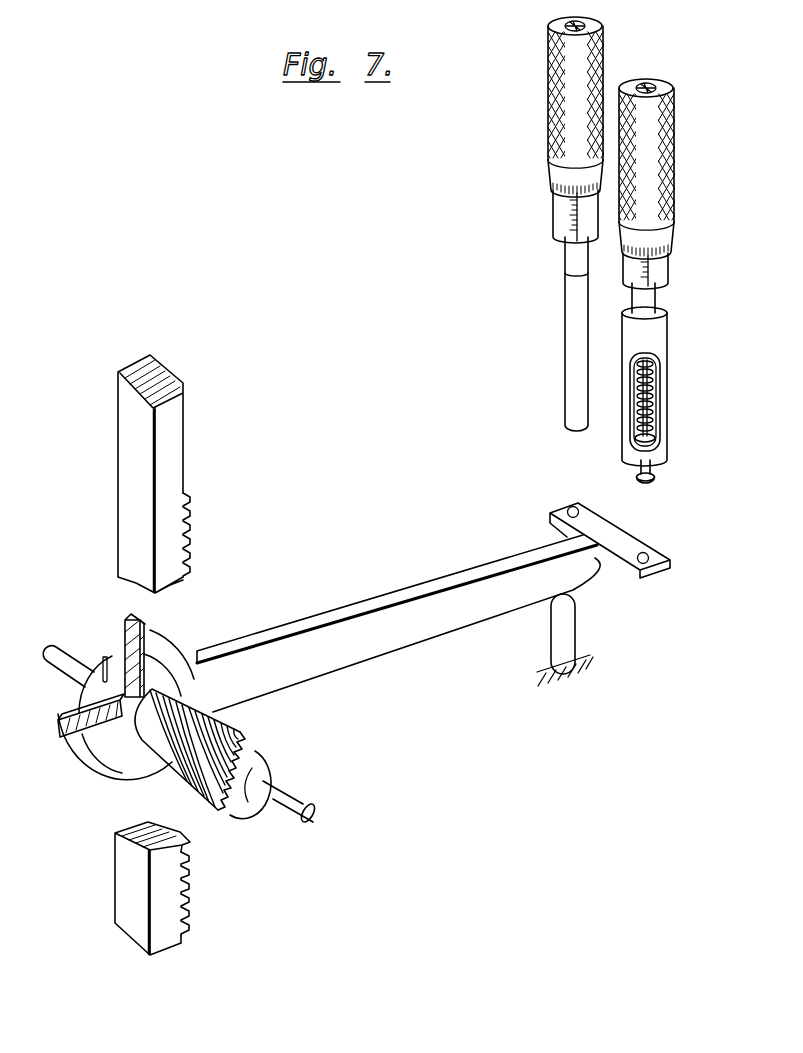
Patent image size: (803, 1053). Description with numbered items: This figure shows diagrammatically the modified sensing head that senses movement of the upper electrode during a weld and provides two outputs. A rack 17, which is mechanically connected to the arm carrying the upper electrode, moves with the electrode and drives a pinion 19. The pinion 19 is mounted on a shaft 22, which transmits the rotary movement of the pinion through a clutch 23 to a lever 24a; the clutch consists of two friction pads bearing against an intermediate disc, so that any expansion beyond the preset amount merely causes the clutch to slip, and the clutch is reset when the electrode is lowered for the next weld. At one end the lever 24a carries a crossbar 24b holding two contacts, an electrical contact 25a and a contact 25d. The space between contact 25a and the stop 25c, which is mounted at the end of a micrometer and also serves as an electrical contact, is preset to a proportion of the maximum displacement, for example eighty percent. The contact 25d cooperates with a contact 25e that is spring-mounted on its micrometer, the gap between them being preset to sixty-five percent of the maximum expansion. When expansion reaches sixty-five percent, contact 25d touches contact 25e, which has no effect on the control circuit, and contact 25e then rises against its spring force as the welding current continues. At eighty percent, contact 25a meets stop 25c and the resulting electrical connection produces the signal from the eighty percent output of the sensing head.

The rack 17 is at (178, 415).
The pinion 19 is at (192, 755).
The shaft 22 is at (291, 800).
The clutch 23 is at (121, 642).
The lever 24a is at (380, 622).
The crossbar 24b is at (596, 554).
The electrical contact 25a is at (571, 506).
The stop 25c is at (570, 417).
The contact 25d is at (646, 566).
The contact 25e is at (636, 478).